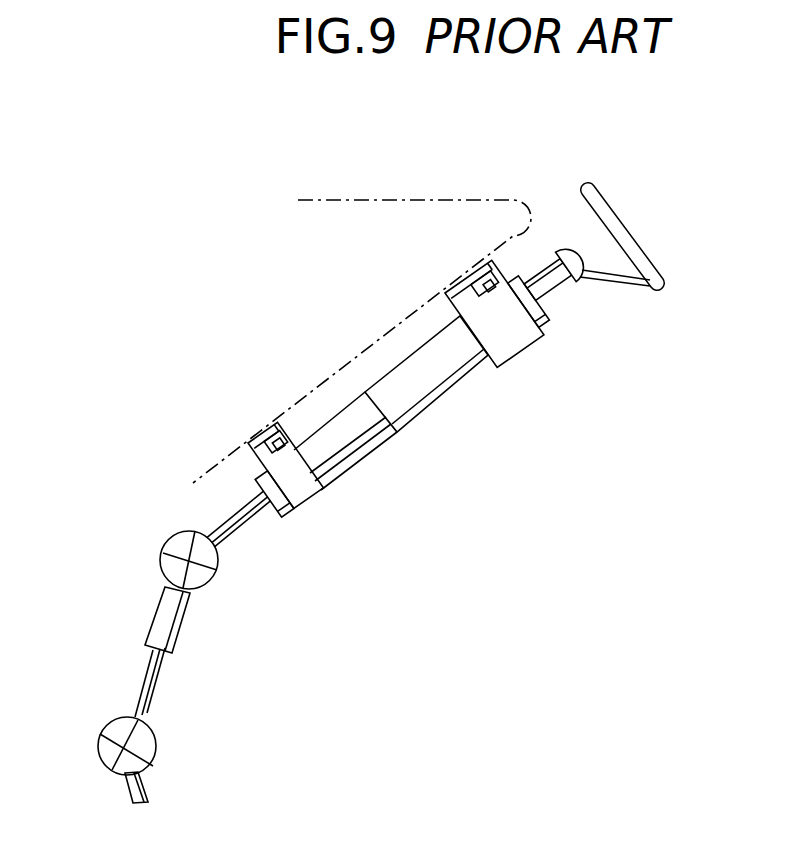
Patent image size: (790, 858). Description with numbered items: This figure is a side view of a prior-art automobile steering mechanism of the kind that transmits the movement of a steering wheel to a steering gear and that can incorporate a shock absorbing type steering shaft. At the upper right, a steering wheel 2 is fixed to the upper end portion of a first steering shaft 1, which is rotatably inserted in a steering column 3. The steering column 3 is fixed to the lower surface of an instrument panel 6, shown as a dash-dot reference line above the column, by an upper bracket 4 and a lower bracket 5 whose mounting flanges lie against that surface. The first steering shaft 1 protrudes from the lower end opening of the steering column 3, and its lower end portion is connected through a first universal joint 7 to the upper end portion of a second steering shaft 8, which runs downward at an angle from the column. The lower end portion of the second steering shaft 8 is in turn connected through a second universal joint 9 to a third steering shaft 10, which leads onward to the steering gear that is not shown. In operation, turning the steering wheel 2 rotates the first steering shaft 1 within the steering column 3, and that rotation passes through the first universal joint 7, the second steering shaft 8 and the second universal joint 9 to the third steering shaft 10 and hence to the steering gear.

The first steering shaft 1 is at (557, 290).
The steering wheel 2 is at (640, 255).
The steering column 3 is at (455, 395).
The upper bracket 4 is at (520, 348).
The lower bracket 5 is at (313, 505).
The instrument panel 6 is at (415, 206).
The first universal joint 7 is at (222, 569).
The second steering shaft 8 is at (194, 621).
The second universal joint 9 is at (160, 748).
The third steering shaft 10 is at (122, 787).